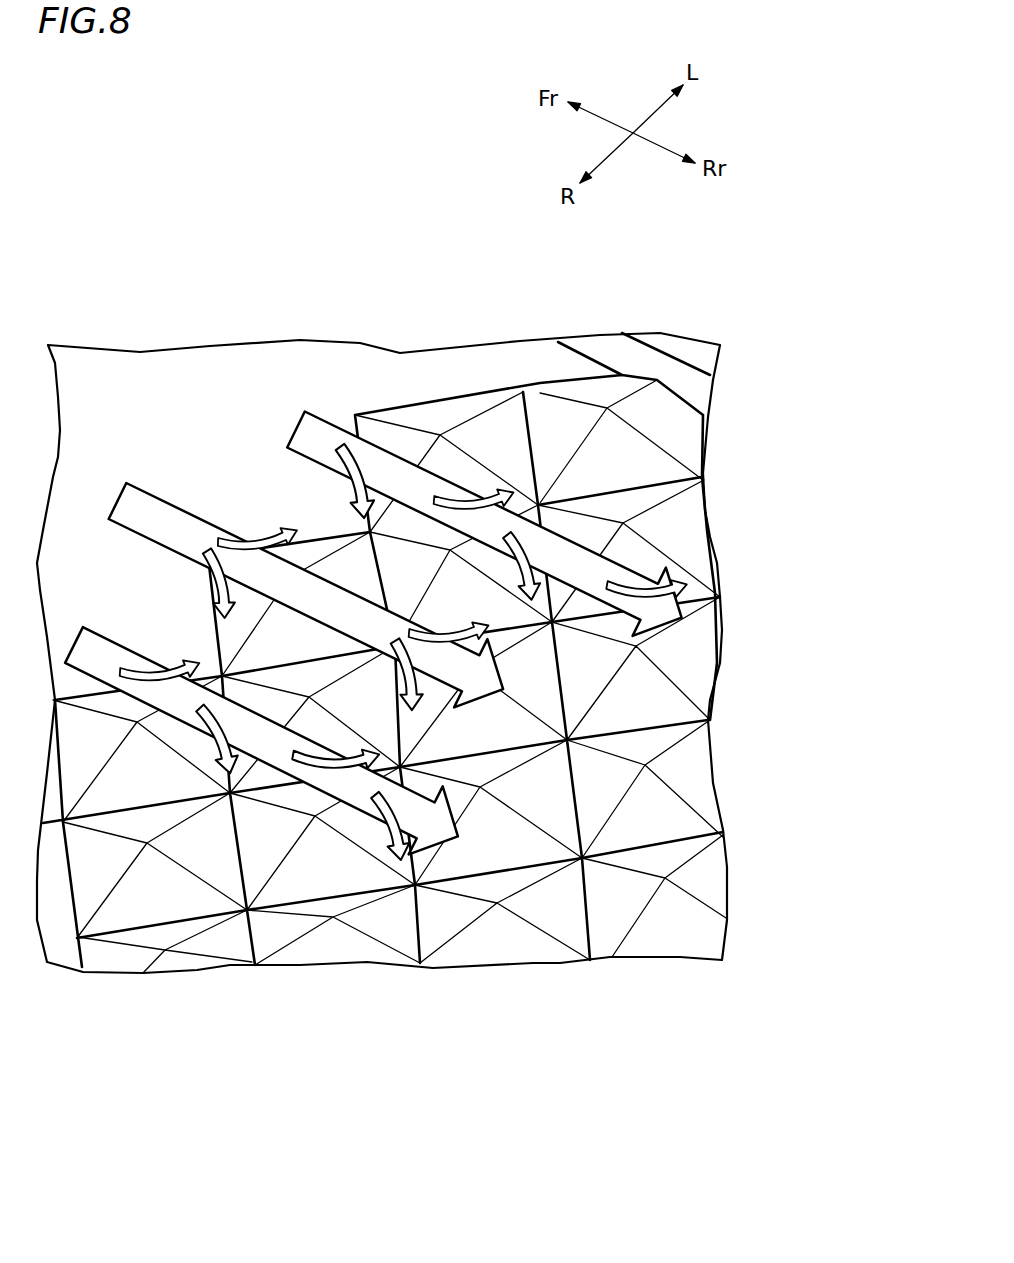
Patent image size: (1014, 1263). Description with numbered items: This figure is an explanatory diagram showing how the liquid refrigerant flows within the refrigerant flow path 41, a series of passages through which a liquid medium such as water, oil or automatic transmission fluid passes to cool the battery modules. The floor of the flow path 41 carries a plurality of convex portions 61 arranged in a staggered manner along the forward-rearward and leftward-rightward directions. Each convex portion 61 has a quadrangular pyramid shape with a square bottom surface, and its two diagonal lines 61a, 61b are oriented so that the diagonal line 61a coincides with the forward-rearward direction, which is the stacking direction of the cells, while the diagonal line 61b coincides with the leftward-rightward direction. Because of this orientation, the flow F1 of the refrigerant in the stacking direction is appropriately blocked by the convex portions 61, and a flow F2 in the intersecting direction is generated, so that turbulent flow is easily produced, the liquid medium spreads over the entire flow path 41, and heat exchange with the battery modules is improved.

The refrigerant flow path 41 is at (160, 372).
The convex portion 61 is at (435, 681).
The diagonal line 61a is at (413, 427).
The diagonal line 61b is at (477, 398).
The flow F1 is at (160, 507).
The flow F2 is at (272, 528).